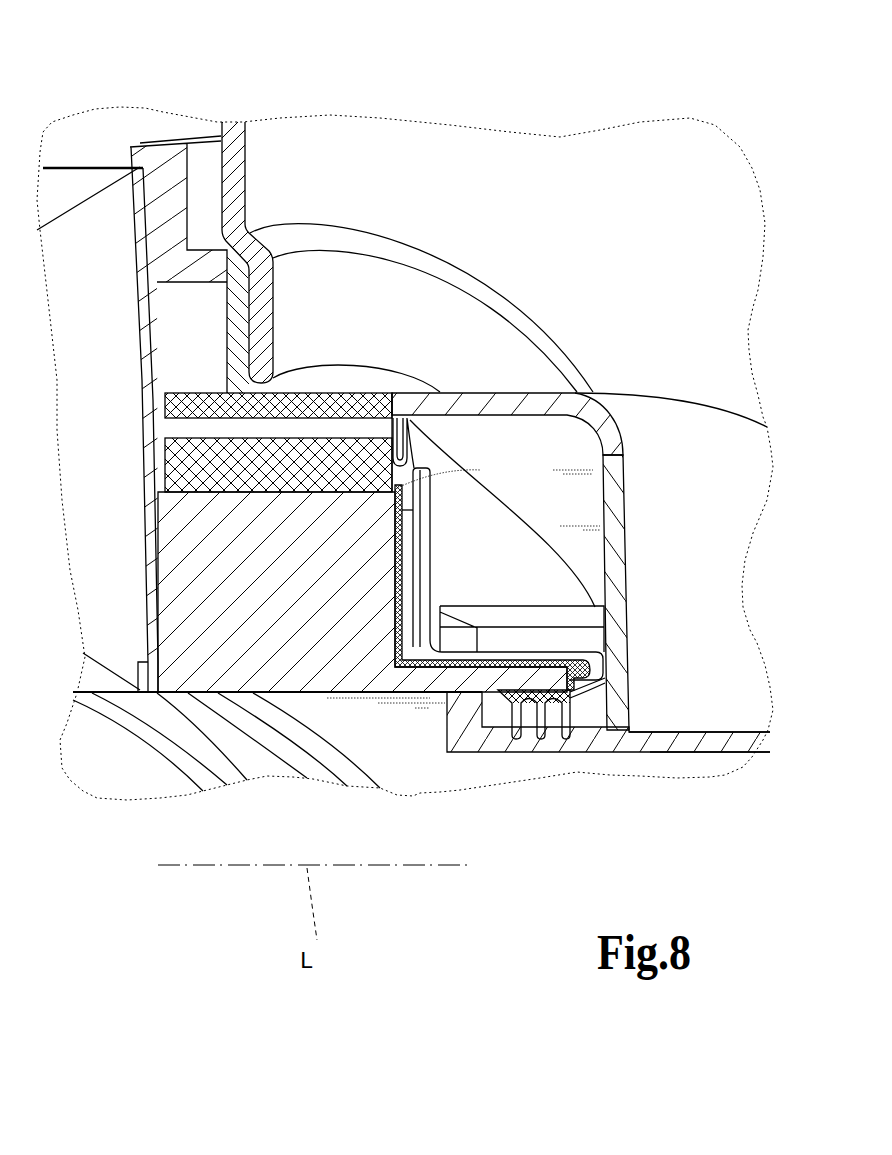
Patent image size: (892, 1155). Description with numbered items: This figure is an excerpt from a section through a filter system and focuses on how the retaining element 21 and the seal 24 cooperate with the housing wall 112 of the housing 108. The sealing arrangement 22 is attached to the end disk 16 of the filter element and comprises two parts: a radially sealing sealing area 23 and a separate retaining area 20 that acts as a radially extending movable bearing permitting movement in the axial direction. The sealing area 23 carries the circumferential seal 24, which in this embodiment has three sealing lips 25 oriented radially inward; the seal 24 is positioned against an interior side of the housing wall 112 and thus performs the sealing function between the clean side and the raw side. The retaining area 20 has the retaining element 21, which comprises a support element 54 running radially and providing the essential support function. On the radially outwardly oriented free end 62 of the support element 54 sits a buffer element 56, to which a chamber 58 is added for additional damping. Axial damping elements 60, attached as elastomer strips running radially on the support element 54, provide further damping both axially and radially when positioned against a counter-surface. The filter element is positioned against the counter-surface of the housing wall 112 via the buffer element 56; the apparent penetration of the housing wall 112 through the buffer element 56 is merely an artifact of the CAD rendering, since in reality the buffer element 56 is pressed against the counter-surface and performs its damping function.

The end disk 16 is at (158, 132).
The retaining area 20 is at (336, 366).
The retaining element 21 is at (425, 576).
The sealing arrangement 22 is at (712, 341).
The sealing area 23 is at (546, 800).
The seal 24 is at (606, 698).
The sealing lip 25 is at (548, 756).
The support element 54 is at (200, 553).
The buffer element 56 is at (172, 462).
The chamber 58 is at (175, 412).
The axial damping element 60 is at (402, 552).
The free end 62 is at (424, 496).
The housing 108 is at (754, 723).
The housing wall 112 is at (690, 750).